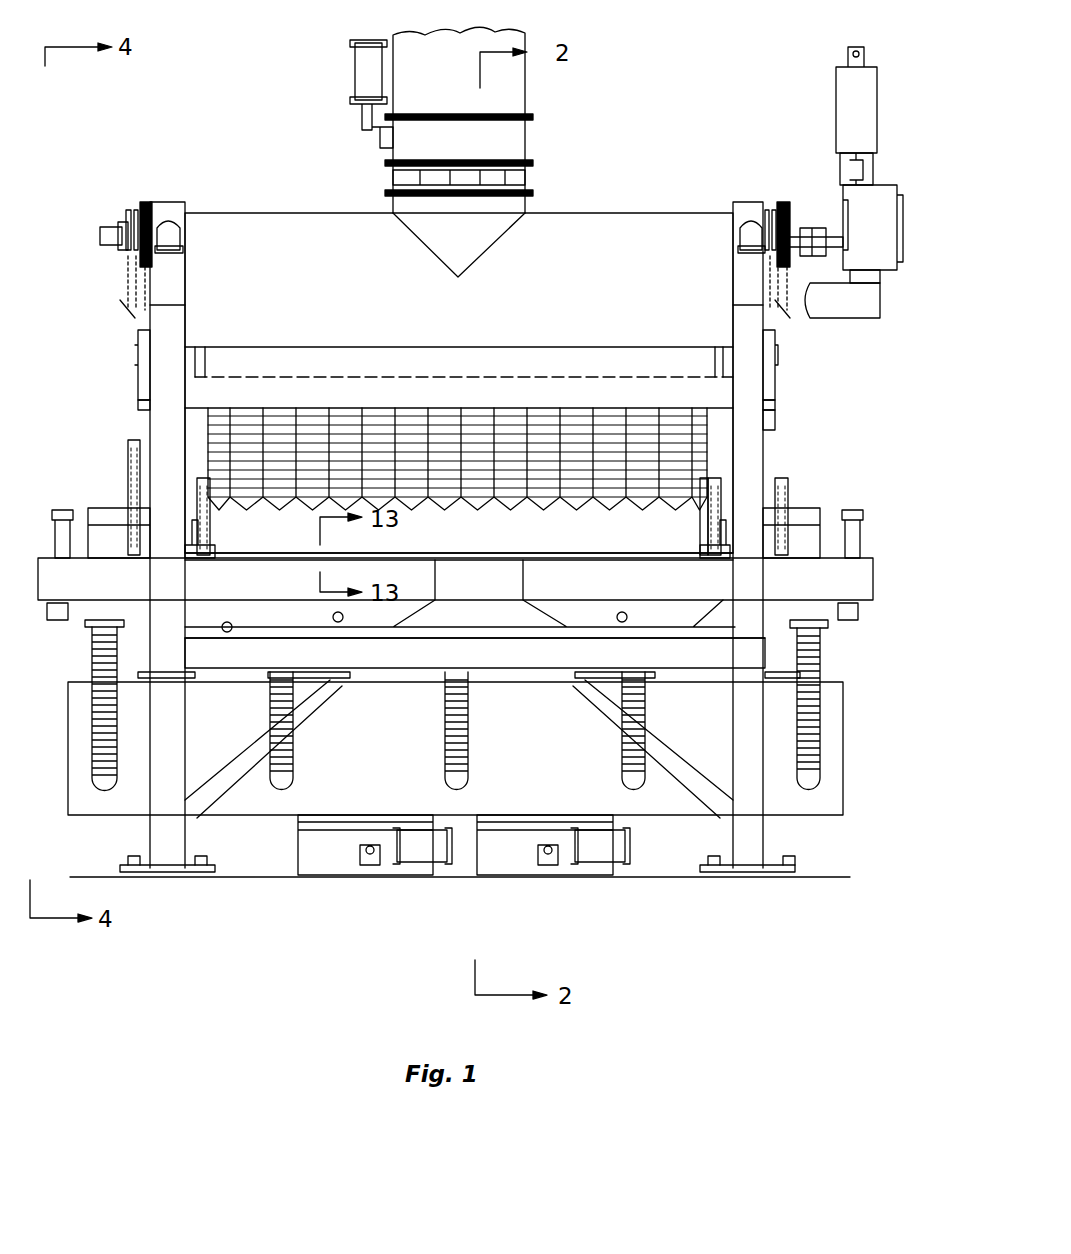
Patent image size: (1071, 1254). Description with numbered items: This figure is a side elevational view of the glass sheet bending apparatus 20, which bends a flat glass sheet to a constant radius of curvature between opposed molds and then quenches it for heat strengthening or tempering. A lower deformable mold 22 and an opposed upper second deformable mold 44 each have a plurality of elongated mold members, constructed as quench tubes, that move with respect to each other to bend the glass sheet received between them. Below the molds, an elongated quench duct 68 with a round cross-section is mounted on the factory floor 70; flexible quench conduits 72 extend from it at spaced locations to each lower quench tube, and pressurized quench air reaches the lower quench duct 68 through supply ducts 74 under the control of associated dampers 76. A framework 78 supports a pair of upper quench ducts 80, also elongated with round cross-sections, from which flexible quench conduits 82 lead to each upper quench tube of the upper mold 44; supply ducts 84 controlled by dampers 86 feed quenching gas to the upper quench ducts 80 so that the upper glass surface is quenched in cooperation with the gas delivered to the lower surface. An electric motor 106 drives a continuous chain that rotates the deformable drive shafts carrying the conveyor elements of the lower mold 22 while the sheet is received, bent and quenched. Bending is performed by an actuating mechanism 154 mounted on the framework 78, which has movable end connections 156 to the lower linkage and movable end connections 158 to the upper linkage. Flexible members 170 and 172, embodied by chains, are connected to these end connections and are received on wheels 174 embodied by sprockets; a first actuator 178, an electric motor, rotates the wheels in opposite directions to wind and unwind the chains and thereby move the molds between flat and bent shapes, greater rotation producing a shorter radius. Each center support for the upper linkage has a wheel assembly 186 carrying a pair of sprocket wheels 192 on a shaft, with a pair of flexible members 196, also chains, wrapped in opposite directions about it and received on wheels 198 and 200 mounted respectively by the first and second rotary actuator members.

The glass sheet bending apparatus 20 is at (692, 125).
The deformable mold 22 is at (128, 583).
The second deformable mold 44 is at (115, 525).
The quench duct 68 is at (250, 820).
The factory floor 70 is at (690, 877).
The flexible quench conduits 72 is at (92, 725).
The supply ducts 74 is at (320, 832).
The dampers 76 is at (415, 860).
The framework 78 is at (785, 429).
The upper quench ducts 80 is at (605, 213).
The flexible quench conduits 82 is at (340, 440).
The supply ducts 84 is at (525, 132).
The dampers 86 is at (352, 80).
The electric motor 106 is at (298, 633).
The actuating mechanism 154 is at (820, 215).
The movable end connection 156 is at (130, 550).
The movable end connections 158 is at (215, 537).
The flexible members 170 is at (125, 335).
The flexible members 172 is at (720, 480).
The wheels 174 is at (128, 290).
The first actuator 178 is at (833, 78).
The wheel assembly 186 is at (138, 404).
The wheels 192 is at (138, 355).
The flexible members 196 is at (185, 305).
The wheel 198 is at (145, 200).
The wheel 200 is at (190, 200).